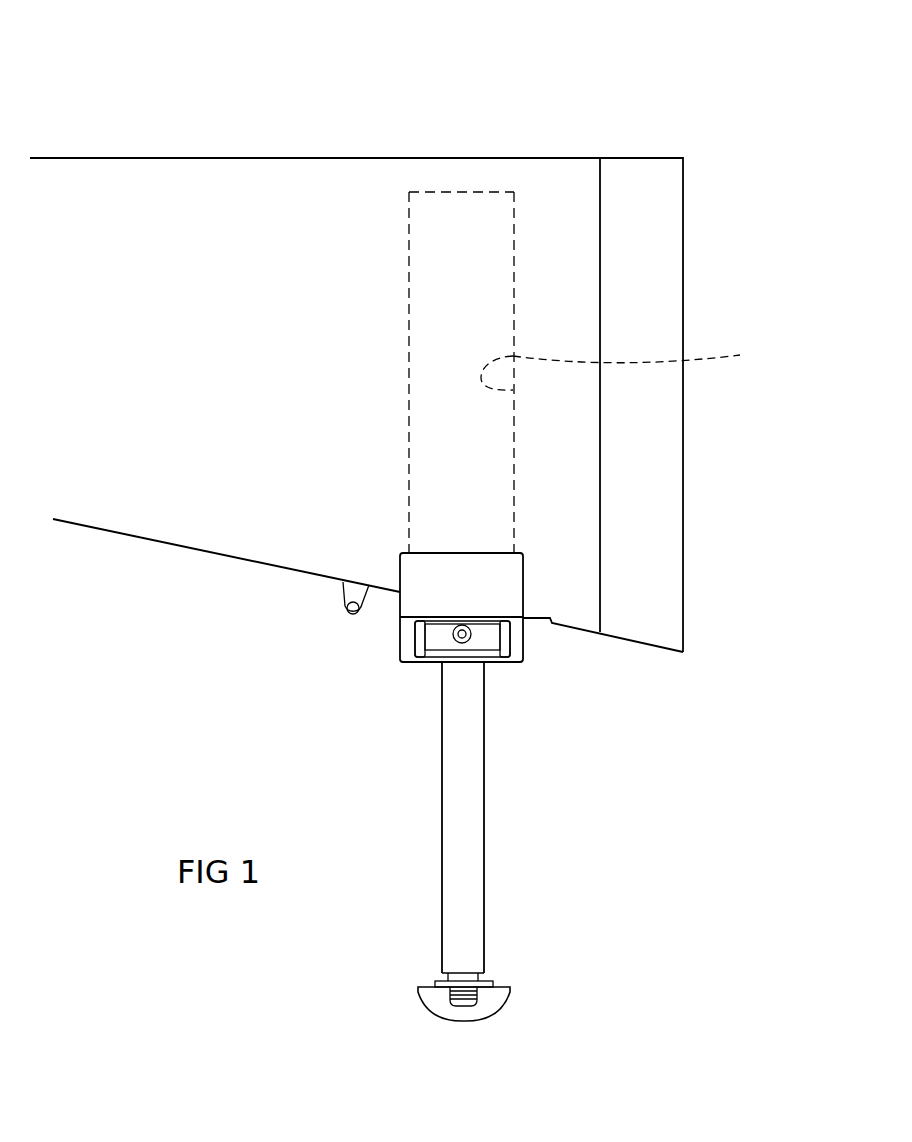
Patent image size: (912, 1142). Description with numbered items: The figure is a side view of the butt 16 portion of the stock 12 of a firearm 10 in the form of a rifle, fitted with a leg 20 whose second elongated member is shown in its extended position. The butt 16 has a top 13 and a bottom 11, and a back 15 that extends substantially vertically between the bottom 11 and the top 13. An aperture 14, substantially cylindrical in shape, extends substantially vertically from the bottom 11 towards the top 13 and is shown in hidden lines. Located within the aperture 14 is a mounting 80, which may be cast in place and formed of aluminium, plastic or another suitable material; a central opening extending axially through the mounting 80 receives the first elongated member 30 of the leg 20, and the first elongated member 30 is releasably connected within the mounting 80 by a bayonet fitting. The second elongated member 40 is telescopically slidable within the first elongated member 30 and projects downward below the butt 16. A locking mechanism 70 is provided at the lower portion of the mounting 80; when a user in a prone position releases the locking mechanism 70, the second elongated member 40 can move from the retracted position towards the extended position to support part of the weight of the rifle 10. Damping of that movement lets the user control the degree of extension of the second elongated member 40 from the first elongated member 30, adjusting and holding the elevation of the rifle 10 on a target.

The firearm 10 is at (135, 90).
The bottom 11 is at (578, 632).
The stock 12 is at (272, 197).
The top 13 is at (591, 157).
The aperture 14 is at (625, 366).
The back 15 is at (683, 455).
The butt 16 is at (670, 230).
The leg 20 is at (545, 778).
The first elongated member 30 is at (440, 335).
The second elongated member 40 is at (473, 875).
The locking mechanism 70 is at (415, 646).
The mounting 80 is at (450, 585).